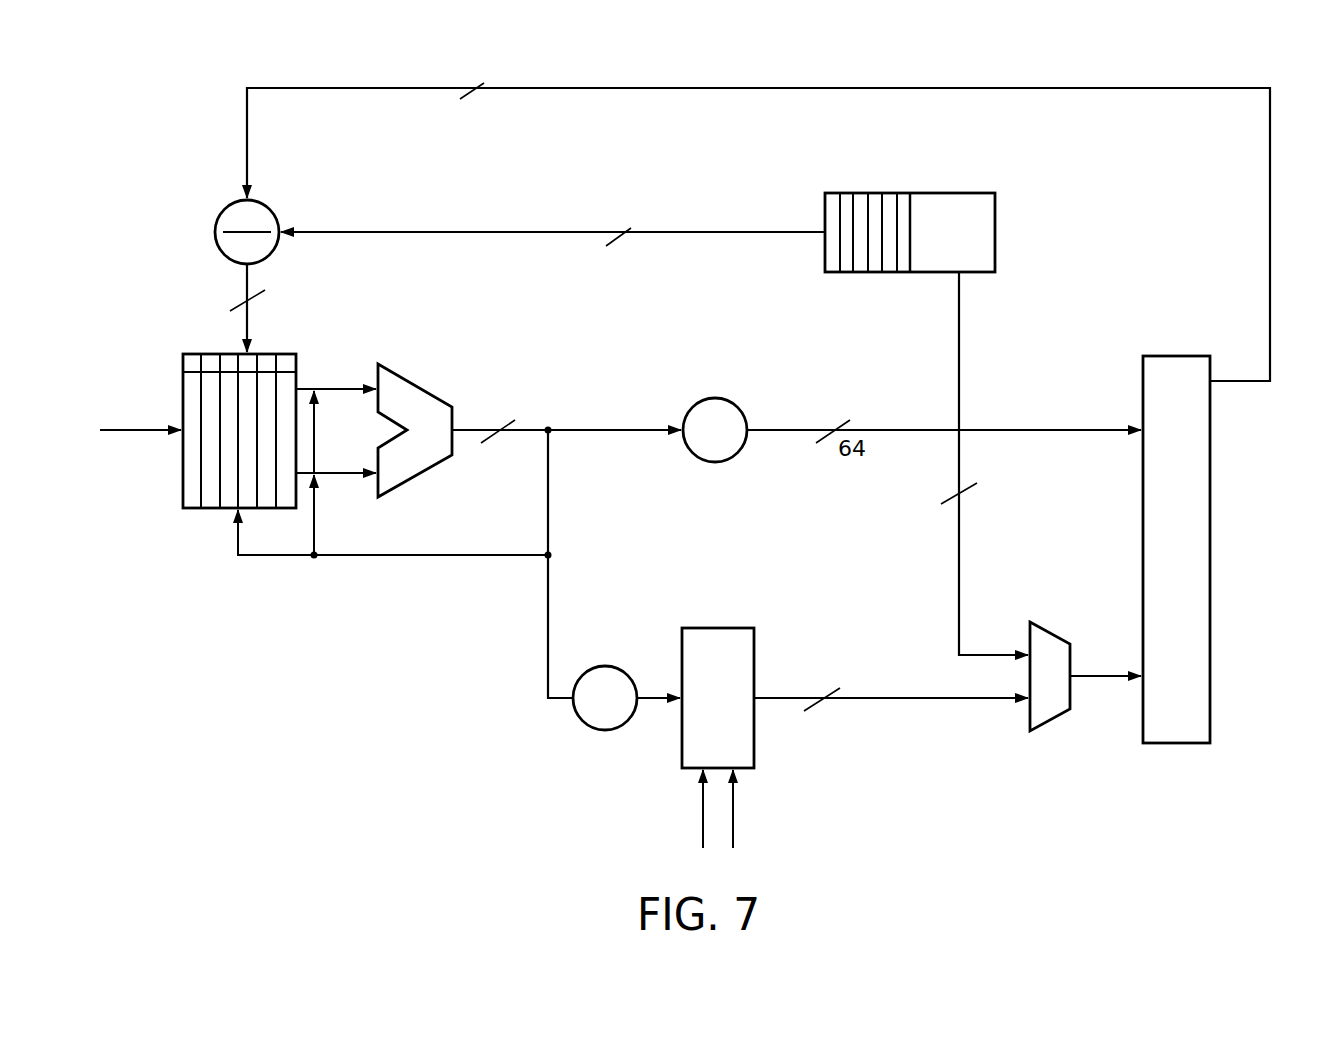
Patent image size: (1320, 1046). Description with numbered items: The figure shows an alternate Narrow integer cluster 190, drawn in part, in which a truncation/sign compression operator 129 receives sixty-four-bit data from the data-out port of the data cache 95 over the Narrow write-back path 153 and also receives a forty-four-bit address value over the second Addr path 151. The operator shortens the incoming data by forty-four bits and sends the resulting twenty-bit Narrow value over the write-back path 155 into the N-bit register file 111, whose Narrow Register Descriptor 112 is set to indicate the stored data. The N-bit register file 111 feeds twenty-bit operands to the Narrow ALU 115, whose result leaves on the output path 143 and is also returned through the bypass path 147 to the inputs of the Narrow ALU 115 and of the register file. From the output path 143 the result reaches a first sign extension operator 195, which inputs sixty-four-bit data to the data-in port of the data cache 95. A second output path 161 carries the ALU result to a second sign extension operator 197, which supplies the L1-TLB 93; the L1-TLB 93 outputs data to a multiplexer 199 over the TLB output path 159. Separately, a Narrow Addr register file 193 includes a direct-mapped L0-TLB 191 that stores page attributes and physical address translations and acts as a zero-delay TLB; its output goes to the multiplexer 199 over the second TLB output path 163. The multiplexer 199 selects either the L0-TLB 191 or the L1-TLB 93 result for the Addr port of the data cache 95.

The Narrow integer cluster 190 is at (368, 695).
The Narrow write-back path 153 is at (246, 120).
The truncation/sign compression operator 129 is at (216, 222).
The second Addr path 151 is at (347, 231).
The write-back path 155 is at (246, 284).
The N-bit register file 111 is at (212, 510).
The Narrow Register Descriptor 112 is at (185, 358).
The Narrow ALU 115 is at (412, 381).
The bypass path 147 is at (427, 556).
The output path 143 is at (598, 429).
The first sign extension operator 195 is at (716, 398).
The second output path 161 is at (548, 603).
The second sign extension operator 197 is at (602, 731).
The L1-TLB 93 is at (718, 738).
The TLB output path 159 is at (886, 699).
The second TLB output path 163 is at (958, 355).
The L0-TLB 191 is at (996, 219).
The Narrow Addr register file 193 is at (870, 193).
The multiplexer 199 is at (1052, 634).
The data cache 95 is at (1181, 356).